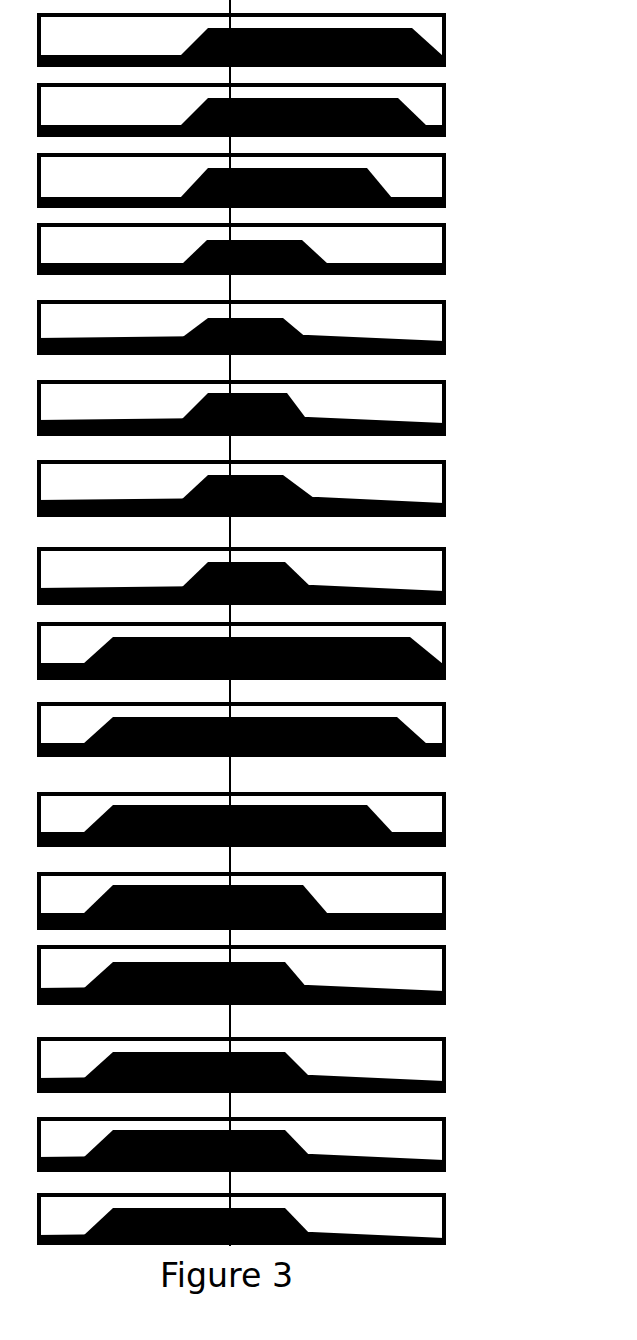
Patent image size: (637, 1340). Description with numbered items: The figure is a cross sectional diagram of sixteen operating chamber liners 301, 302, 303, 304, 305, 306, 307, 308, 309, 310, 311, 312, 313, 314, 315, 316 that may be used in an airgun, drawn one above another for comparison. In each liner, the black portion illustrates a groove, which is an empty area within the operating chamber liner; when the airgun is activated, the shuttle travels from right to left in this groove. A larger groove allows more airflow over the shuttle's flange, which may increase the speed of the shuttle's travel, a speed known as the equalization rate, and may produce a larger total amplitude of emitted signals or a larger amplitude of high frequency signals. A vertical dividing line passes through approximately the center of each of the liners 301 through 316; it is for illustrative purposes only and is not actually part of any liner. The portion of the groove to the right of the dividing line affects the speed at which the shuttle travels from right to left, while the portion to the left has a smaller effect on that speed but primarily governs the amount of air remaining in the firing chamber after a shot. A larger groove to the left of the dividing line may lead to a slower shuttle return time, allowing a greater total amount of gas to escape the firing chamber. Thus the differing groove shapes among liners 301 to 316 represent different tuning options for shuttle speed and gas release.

The operating chamber liner 301 is at (446, 34).
The operating chamber liner 302 is at (446, 104).
The operating chamber liner 303 is at (446, 174).
The operating chamber liner 304 is at (446, 244).
The operating chamber liner 305 is at (446, 321).
The operating chamber liner 306 is at (446, 401).
The operating chamber liner 307 is at (446, 481).
The operating chamber liner 308 is at (446, 568).
The operating chamber liner 309 is at (446, 643).
The operating chamber liner 310 is at (446, 723).
The operating chamber liner 311 is at (446, 813).
The operating chamber liner 312 is at (446, 893).
The operating chamber liner 313 is at (446, 966).
The operating chamber liner 314 is at (446, 1058).
The operating chamber liner 315 is at (446, 1138).
The operating chamber liner 316 is at (446, 1214).